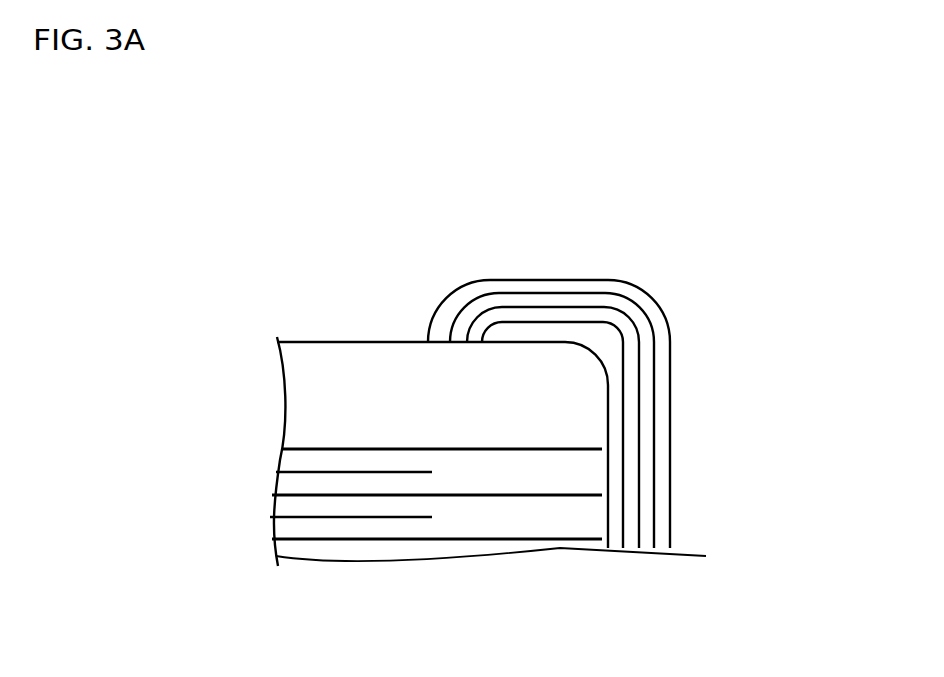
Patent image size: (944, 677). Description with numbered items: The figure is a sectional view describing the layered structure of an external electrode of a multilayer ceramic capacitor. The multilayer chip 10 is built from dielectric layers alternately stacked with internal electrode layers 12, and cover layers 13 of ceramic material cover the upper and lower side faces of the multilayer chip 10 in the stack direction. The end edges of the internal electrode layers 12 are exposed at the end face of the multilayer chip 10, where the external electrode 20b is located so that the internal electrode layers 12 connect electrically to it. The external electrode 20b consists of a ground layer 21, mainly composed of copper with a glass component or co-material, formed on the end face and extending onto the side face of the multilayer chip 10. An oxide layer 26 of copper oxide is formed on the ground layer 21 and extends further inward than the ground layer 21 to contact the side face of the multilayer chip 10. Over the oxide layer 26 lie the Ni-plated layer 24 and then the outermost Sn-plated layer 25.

The multilayer chip 10 is at (293, 333).
The internal electrode layer 12 is at (482, 543).
The cover layer 13 is at (343, 377).
The external electrode 20b is at (647, 410).
The ground layer 21 is at (615, 468).
The Ni-plated layer 24 is at (647, 367).
The Sn-plated layer 25 is at (589, 413).
The oxide layer 26 is at (628, 412).